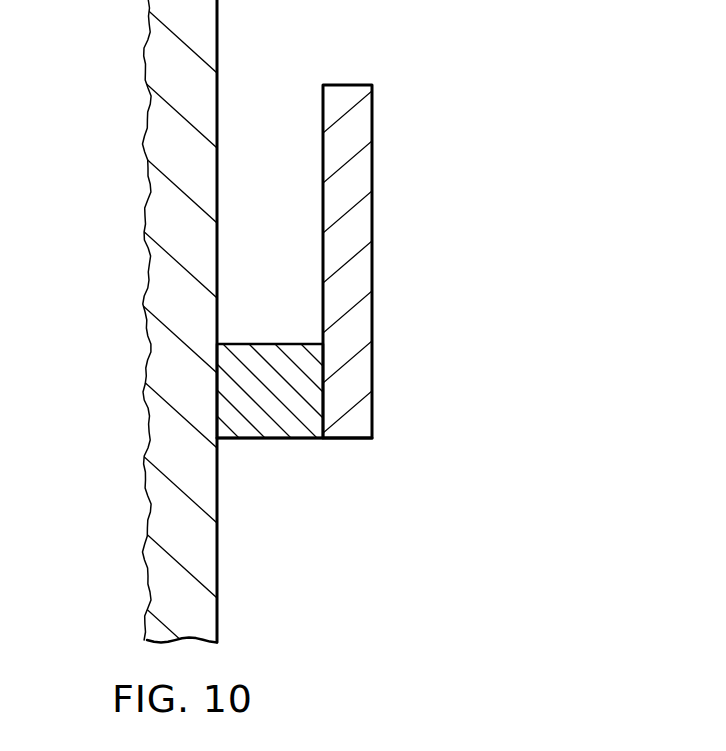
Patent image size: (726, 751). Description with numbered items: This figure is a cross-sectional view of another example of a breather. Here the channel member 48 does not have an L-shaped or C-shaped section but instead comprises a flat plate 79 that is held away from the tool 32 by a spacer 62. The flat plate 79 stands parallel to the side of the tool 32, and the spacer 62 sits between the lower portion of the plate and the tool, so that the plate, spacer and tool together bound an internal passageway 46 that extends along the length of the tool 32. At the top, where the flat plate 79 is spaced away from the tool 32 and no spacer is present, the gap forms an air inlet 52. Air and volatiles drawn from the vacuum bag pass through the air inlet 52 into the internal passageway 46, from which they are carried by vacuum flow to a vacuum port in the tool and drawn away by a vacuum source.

The tool 32 is at (148, 270).
The internal passageway 46 is at (284, 232).
The channel member 48 is at (362, 217).
The air inlet 52 is at (275, 86).
The spacer 62 is at (275, 430).
The flat plate 79 is at (397, 273).